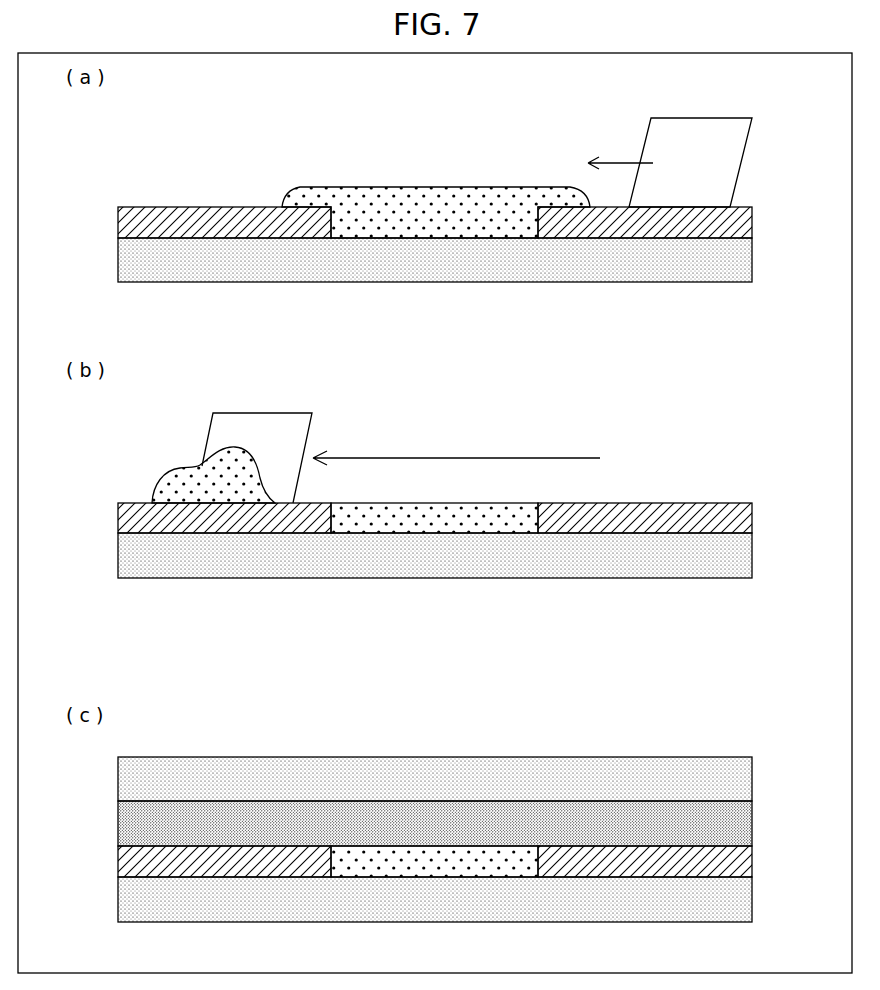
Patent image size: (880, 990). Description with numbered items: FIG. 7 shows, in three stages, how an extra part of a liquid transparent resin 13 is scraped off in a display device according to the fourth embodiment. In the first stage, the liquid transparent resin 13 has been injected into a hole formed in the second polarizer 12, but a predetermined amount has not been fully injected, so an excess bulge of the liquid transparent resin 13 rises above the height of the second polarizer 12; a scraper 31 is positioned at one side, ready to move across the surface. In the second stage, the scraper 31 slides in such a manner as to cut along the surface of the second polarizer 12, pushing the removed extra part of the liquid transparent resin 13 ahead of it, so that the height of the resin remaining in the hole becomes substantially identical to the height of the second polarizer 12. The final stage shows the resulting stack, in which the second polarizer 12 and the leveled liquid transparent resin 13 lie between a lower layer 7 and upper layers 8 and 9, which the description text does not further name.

The substrate 7 is at (741, 262).
The second layer 8 is at (741, 827).
The third layer 9 is at (741, 782).
The second polarizer 12 is at (741, 226).
The liquid transparent resin 13 is at (437, 200).
The scraper 31 is at (700, 133).